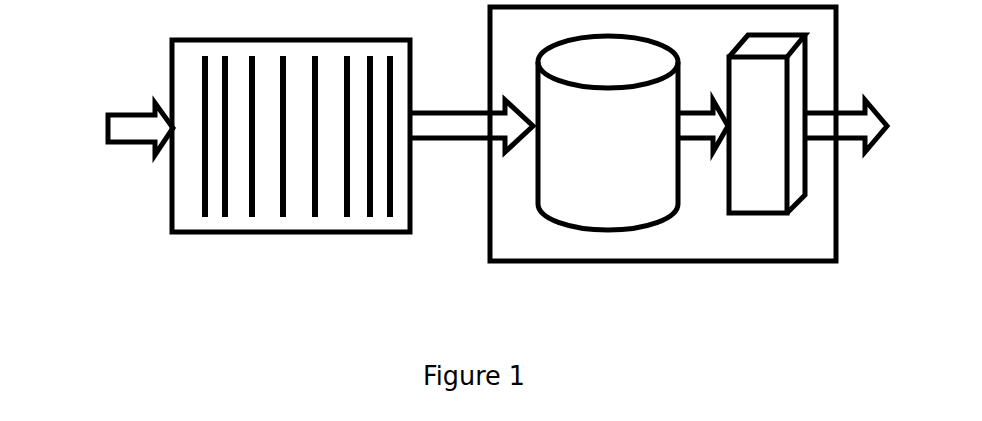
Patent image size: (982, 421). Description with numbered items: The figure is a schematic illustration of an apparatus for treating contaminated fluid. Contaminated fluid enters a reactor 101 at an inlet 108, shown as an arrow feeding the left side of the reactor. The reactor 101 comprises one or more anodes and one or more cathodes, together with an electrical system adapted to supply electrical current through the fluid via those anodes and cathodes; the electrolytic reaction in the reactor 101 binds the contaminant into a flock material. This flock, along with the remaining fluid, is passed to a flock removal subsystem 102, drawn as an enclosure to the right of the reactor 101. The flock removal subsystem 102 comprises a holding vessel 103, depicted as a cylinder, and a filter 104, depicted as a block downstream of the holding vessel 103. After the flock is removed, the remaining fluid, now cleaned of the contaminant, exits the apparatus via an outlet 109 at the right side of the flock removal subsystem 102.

The reactor 101 is at (185, 232).
The flock removal subsystem 102 is at (492, 265).
The holding vessel 103 is at (580, 230).
The filter 104 is at (750, 213).
The inlet 108 is at (145, 112).
The outlet 109 is at (870, 143).